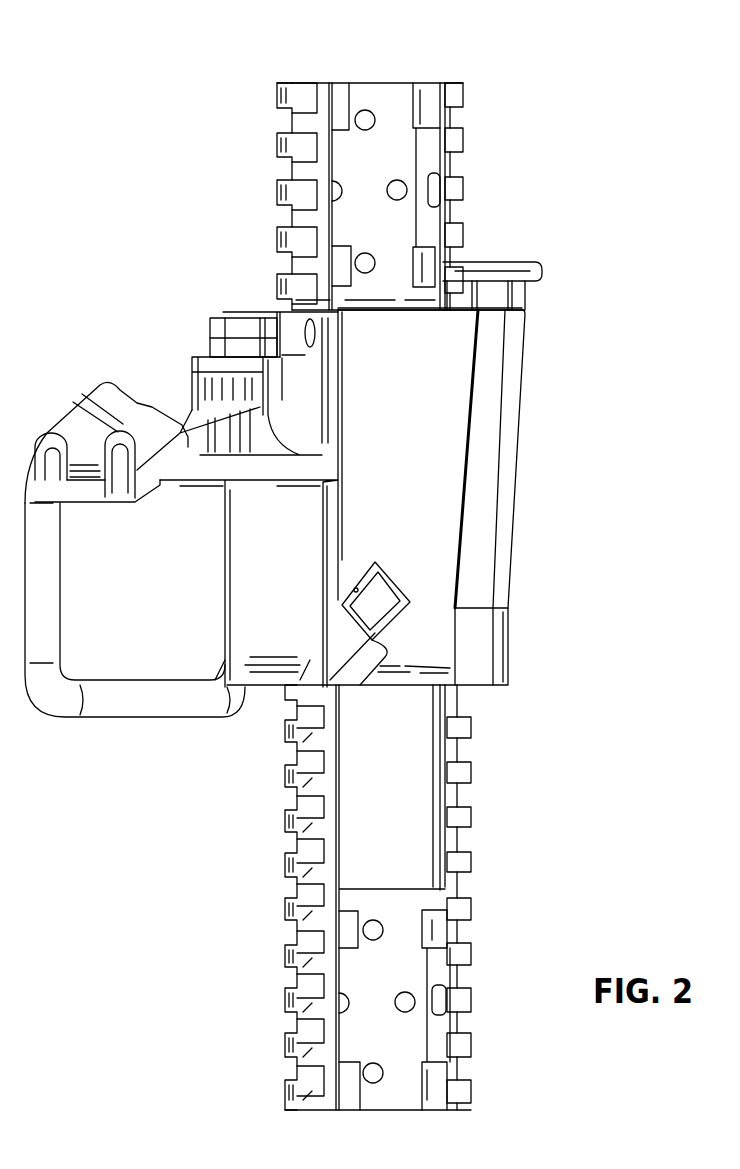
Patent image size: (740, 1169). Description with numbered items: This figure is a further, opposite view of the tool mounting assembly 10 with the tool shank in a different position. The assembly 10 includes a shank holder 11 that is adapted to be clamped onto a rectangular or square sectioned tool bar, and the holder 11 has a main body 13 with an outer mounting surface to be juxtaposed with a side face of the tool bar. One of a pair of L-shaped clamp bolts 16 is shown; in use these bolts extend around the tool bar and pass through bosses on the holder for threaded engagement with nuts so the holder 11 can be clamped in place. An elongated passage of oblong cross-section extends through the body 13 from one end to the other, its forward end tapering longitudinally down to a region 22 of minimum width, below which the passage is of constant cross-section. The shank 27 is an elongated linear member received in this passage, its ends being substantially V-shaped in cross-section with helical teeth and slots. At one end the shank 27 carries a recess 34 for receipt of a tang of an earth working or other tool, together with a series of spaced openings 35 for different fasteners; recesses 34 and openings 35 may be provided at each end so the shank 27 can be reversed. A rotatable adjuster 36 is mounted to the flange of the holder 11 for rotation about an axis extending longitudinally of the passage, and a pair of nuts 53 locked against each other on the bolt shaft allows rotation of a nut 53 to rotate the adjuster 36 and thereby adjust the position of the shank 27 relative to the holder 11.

The tool mounting assembly 10 is at (580, 244).
The shank holder 11 is at (515, 381).
The main body 13 is at (492, 468).
The L-shaped clamp bolt 16 is at (120, 722).
The region of minimum width 22 is at (492, 605).
The shank 27 is at (410, 790).
The recess 34 is at (412, 150).
The spaced openings 35 is at (396, 180).
The rotatable adjuster 36 is at (188, 384).
The nuts 53 is at (210, 345).